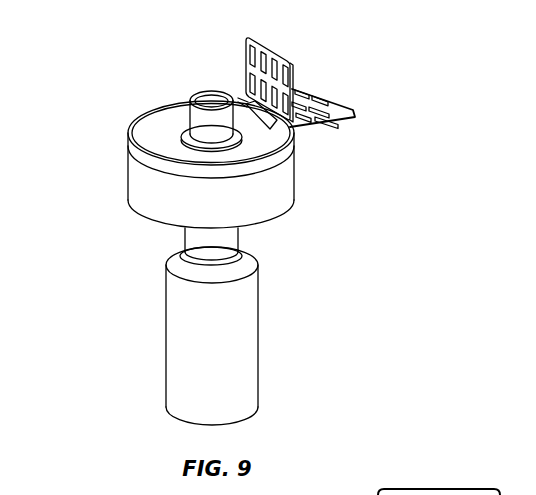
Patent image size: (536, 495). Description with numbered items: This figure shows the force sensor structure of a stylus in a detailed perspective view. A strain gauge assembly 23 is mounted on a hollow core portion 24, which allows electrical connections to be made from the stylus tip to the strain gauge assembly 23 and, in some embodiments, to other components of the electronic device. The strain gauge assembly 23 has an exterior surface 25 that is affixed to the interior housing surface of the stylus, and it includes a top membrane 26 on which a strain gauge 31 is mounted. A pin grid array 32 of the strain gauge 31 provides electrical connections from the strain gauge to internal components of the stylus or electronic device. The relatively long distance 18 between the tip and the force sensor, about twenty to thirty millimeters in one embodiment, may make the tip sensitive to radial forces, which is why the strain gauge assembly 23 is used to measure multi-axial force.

The distance 18 is at (272, 236).
The strain gauge assembly 23 is at (218, 146).
The hollow core portion 24 is at (213, 98).
The exterior surface 25 is at (135, 185).
The top membrane 26 is at (132, 128).
The strain gauge 31 is at (161, 119).
The pin grid array 32 is at (340, 108).